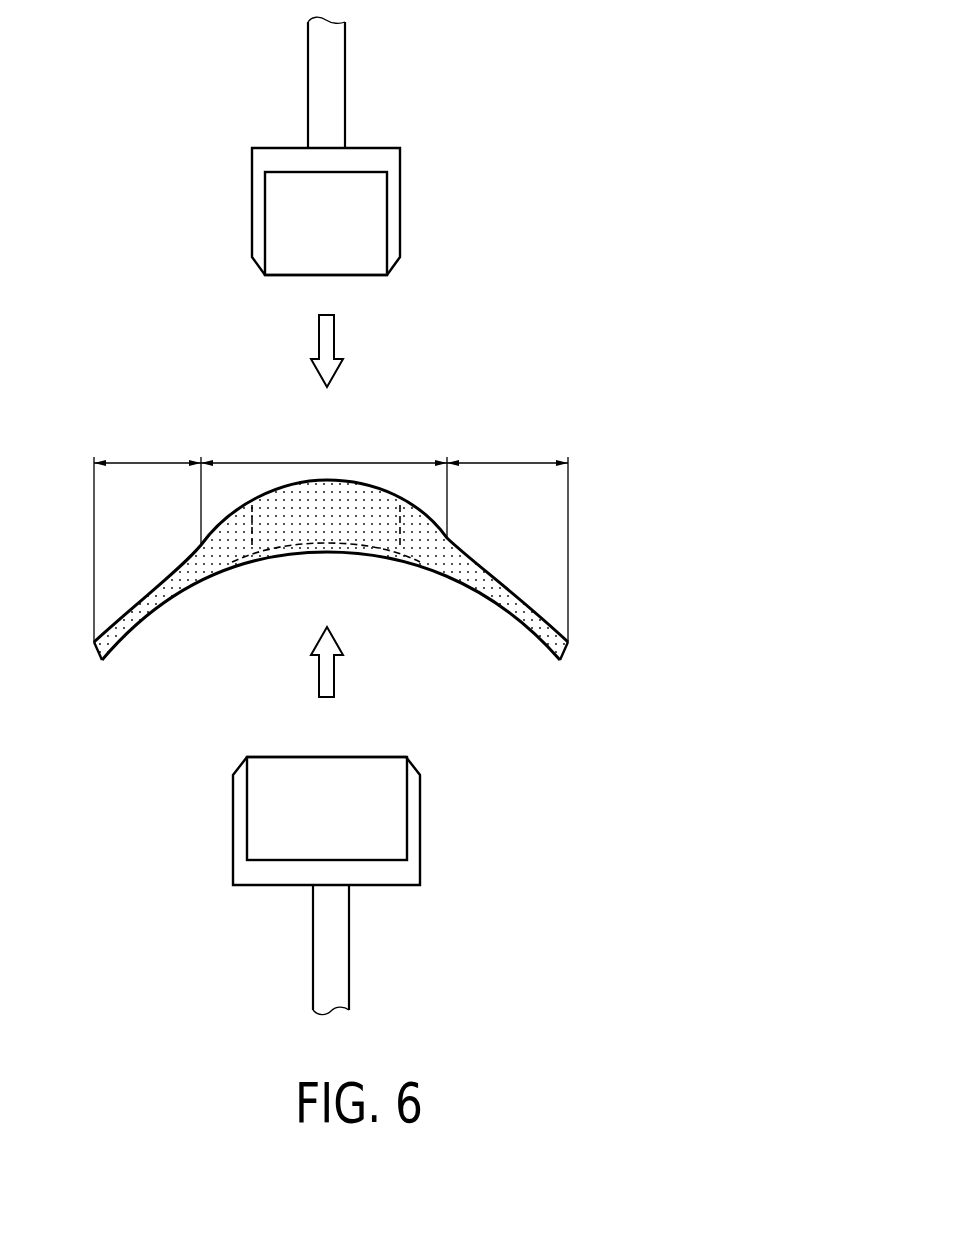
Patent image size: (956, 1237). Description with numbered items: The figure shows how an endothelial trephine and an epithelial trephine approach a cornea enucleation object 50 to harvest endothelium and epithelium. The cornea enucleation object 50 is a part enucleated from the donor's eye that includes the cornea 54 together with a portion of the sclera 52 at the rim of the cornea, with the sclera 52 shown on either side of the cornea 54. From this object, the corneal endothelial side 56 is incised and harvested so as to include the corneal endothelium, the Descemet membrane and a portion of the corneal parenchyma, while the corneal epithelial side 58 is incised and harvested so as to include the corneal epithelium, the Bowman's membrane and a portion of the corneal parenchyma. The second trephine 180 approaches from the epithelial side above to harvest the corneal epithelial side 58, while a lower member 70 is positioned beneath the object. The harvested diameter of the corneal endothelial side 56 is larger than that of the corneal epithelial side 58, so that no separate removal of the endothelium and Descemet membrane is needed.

The second trephine 180 is at (345, 77).
The lower support member 70 is at (420, 828).
The cornea enucleation object 50 is at (606, 563).
The sclera 52 is at (540, 462).
The cornea 54 is at (393, 463).
The corneal endothelial side 56 is at (402, 558).
The corneal epithelial side 58 is at (285, 502).